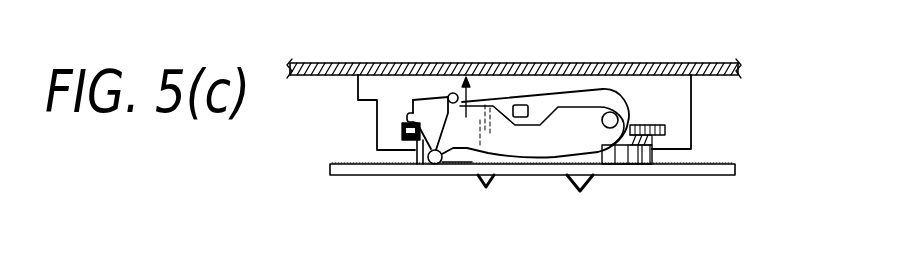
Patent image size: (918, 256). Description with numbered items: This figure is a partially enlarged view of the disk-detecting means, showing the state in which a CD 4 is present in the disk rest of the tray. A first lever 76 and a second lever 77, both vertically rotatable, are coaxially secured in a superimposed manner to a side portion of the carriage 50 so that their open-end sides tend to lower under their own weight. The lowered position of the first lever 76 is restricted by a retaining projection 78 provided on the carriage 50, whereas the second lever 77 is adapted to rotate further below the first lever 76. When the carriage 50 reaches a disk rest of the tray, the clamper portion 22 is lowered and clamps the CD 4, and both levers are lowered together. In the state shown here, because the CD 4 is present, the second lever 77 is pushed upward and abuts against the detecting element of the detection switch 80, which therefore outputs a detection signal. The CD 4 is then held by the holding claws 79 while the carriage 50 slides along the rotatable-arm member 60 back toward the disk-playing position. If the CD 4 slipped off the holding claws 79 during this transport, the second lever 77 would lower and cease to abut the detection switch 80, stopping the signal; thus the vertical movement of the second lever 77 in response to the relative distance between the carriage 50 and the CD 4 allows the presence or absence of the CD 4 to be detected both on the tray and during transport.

The CD 4 is at (702, 176).
The clamper portion 22 is at (640, 166).
The carriage 50 is at (692, 118).
The rotatable-arm member 60 is at (665, 63).
The first lever 76 is at (433, 108).
The second lever 77 is at (468, 149).
The retaining projection 78 is at (410, 120).
The holding claws 79 is at (592, 190).
The detection switch 80 is at (521, 104).